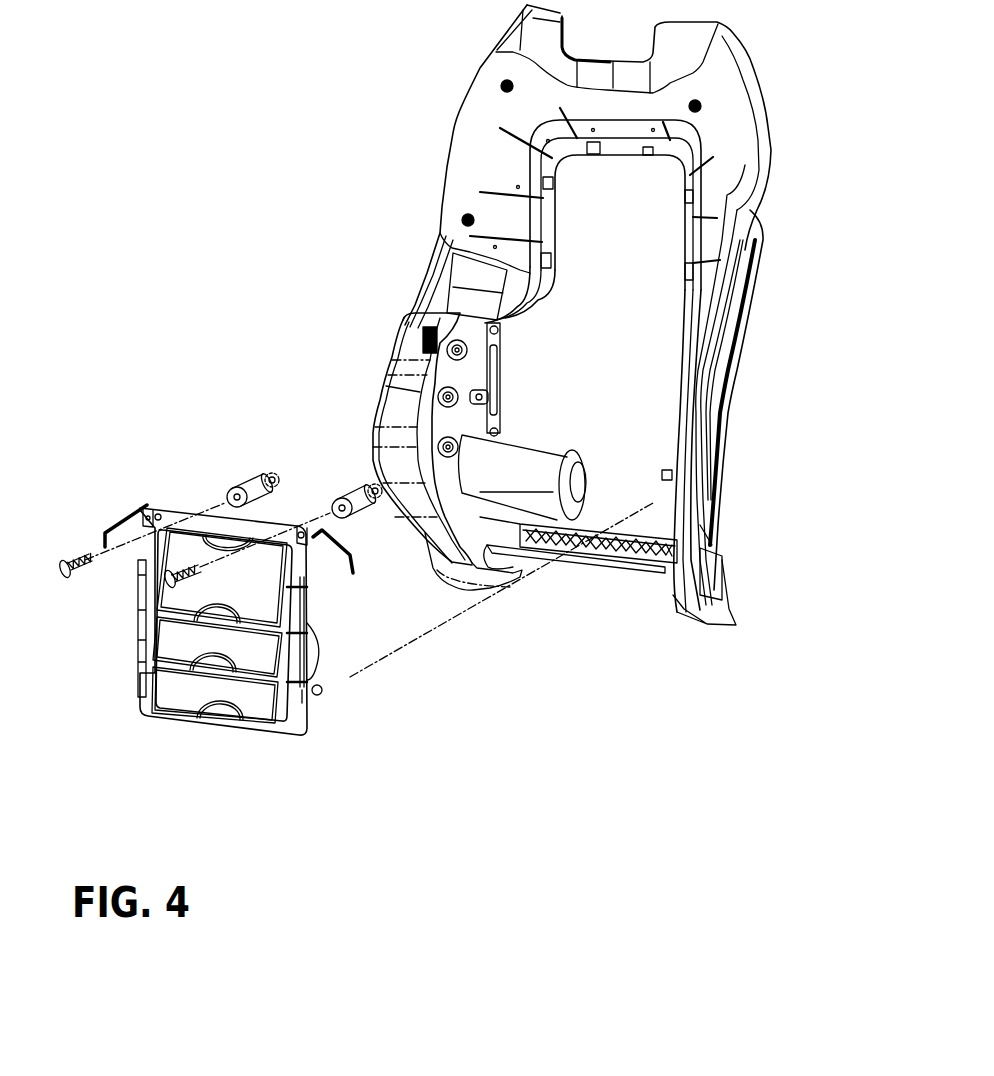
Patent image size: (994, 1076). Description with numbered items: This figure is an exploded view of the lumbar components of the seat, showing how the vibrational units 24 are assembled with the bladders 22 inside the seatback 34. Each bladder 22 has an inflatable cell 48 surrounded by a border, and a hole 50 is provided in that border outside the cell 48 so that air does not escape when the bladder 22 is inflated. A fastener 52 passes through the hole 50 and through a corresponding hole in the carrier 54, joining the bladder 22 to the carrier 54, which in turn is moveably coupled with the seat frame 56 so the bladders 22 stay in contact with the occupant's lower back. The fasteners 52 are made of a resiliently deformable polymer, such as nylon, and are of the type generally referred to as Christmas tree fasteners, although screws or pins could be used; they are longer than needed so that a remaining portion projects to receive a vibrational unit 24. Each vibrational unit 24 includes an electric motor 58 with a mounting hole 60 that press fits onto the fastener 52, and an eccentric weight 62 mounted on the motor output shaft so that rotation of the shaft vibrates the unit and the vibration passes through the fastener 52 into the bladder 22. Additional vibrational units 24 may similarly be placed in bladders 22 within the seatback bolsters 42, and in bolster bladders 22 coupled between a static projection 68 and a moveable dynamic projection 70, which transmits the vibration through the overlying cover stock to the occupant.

The bladder 22 is at (195, 652).
The vibrational unit 24 is at (282, 459).
The seatback 34 is at (778, 92).
The seatback bolster 42 is at (392, 333).
The cell 48 is at (232, 597).
The hole 50 is at (168, 517).
The fastener 52 is at (63, 566).
The carrier 54 is at (147, 700).
The seat frame 56 is at (749, 204).
The electric motor 58 is at (227, 496).
The mounting hole 60 is at (240, 500).
The eccentric weight 62 is at (266, 480).
The static projection 68 is at (716, 556).
The dynamic projection 70 is at (390, 387).